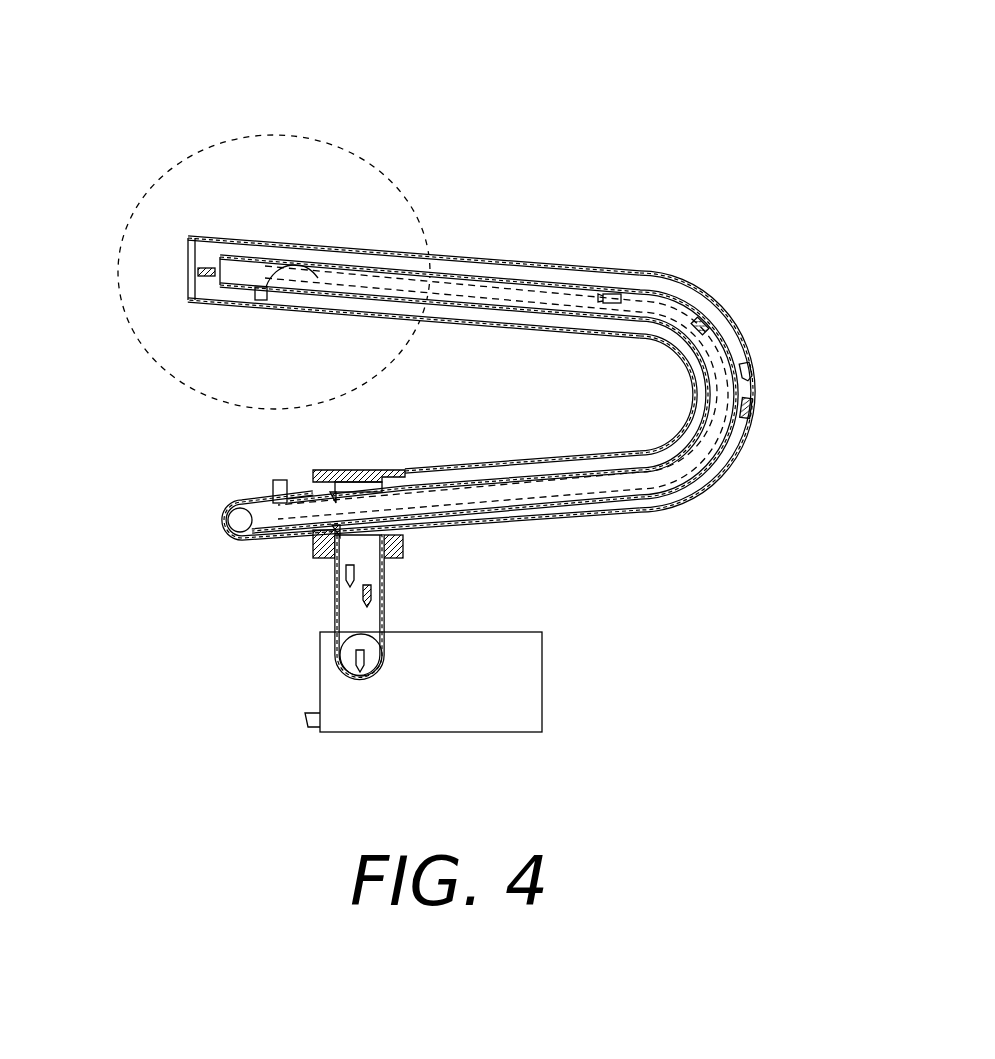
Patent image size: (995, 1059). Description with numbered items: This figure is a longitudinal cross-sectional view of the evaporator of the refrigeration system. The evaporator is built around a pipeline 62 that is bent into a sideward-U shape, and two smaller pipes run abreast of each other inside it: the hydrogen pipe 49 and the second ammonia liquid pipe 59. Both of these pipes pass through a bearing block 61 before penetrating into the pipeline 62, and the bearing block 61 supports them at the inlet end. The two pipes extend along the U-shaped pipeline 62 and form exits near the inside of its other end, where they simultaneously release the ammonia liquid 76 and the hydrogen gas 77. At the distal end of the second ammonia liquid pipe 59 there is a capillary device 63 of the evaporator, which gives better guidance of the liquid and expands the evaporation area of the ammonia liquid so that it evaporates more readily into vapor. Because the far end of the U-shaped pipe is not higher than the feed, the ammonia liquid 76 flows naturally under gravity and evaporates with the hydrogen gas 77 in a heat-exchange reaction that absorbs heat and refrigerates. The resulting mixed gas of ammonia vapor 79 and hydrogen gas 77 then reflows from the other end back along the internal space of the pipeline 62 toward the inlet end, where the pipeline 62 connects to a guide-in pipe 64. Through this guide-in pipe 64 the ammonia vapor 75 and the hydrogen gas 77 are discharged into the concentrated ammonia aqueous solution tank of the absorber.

The hydrogen pipe 49 is at (205, 302).
The second ammonia liquid pipe 59 is at (323, 287).
The bearing block 61 is at (315, 541).
The pipeline 62 is at (743, 455).
The capillary device of evaporator 63 is at (258, 290).
The guide-in pipe 64 is at (385, 573).
The ammonia vapor 75 is at (366, 665).
The ammonia liquid 76 is at (618, 300).
The hydrogen gas 77 is at (190, 264).
The ammonia vapor 79 is at (752, 370).